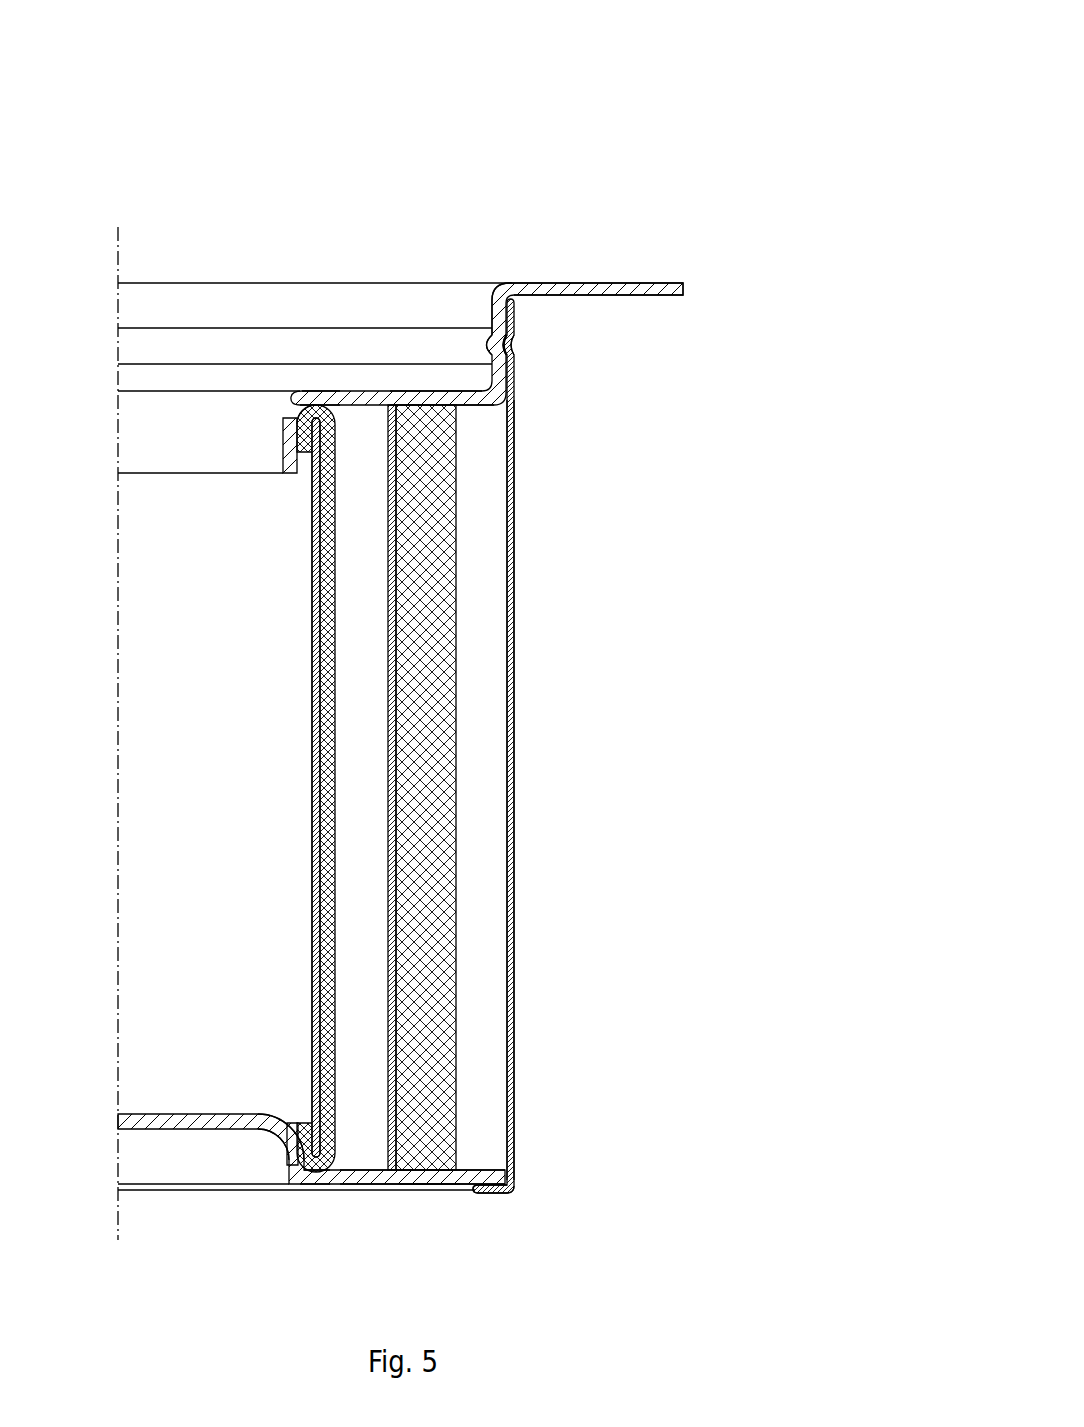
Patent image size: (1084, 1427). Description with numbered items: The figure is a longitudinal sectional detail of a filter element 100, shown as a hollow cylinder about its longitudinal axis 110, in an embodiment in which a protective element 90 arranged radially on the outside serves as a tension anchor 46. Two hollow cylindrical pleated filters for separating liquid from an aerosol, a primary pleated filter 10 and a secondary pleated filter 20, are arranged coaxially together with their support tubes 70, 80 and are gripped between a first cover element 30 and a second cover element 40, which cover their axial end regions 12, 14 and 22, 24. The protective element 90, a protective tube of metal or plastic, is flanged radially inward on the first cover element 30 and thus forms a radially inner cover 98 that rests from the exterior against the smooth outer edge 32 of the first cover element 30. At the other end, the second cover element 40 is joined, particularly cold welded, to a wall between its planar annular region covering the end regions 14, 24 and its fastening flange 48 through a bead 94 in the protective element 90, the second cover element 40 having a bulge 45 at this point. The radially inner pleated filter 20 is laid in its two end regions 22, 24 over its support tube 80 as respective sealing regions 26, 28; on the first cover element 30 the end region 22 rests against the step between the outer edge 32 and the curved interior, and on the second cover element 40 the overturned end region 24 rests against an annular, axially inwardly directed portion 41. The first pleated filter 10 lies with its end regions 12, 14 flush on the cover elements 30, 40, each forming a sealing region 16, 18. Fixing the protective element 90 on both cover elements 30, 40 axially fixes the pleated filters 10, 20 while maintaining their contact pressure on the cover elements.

The primary pleated filter 10 is at (443, 702).
The axial end region 12 is at (424, 1183).
The axial end region 14 is at (425, 392).
The sealing region 16 is at (463, 1152).
The sealing region 18 is at (465, 417).
The secondary pleated filter 20 is at (328, 702).
The axial end region 22 is at (314, 1187).
The axial end region 24 is at (323, 392).
The sealing region 26 is at (296, 1162).
The sealing region 28 is at (285, 418).
The first cover element 30 is at (167, 1130).
The edge 32 is at (365, 1185).
The second cover element 40 is at (560, 283).
The axially inwardly directed portion 41 is at (283, 440).
The bulge 45 is at (490, 342).
The tension anchor 46 is at (510, 790).
The fastening flange 48 is at (657, 290).
The support tube 70 is at (390, 737).
The support tube 80 is at (318, 765).
The protective element 90 is at (517, 637).
The bead 94 is at (514, 345).
The radially inner cover 98 is at (483, 1195).
The filter element 100 is at (704, 178).
The longitudinal axis 110 is at (117, 247).